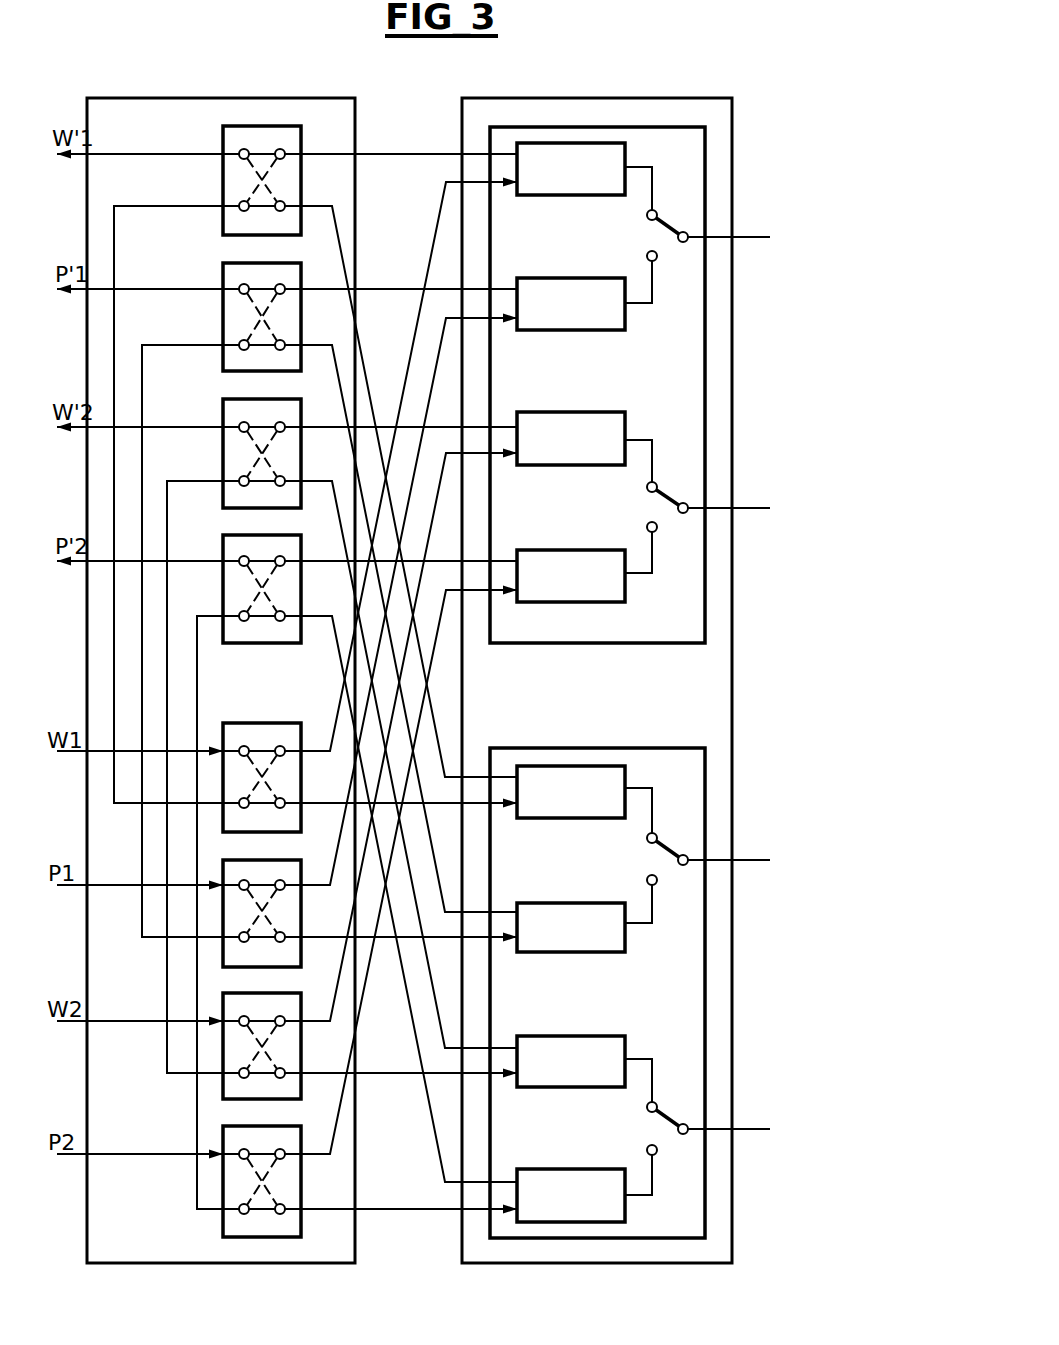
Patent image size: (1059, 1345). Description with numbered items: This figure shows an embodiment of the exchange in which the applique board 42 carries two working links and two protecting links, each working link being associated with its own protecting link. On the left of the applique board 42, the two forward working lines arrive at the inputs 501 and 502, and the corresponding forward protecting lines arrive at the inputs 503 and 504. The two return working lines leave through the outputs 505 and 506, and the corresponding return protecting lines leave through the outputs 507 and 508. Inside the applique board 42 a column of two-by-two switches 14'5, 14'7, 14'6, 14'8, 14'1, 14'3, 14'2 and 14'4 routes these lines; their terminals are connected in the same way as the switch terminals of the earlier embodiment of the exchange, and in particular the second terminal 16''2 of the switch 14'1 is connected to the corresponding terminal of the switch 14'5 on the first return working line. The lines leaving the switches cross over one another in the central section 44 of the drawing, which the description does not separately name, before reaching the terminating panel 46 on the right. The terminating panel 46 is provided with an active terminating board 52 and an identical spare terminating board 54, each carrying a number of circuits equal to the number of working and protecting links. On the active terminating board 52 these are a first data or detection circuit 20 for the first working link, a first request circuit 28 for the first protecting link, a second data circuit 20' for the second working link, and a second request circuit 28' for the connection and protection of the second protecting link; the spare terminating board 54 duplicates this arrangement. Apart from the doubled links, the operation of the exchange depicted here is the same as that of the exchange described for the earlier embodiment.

The applique board 42 is at (221, 698).
The crossbar interconnection 44 is at (409, 739).
The terminating panel 46 is at (597, 698).
The active terminating board 52 is at (635, 643).
The spare terminating board 54 is at (683, 748).
The output 505 is at (132, 153).
The output 507 is at (155, 289).
The output 506 is at (172, 427).
The output 508 is at (190, 561).
The input 501 is at (76, 751).
The input 503 is at (76, 885).
The input 502 is at (76, 1021).
The input 504 is at (76, 1154).
The 2x2 switch 14'5 is at (262, 129).
The 2x2 switch 14'7 is at (225, 317).
The 2x2 switch 14'6 is at (225, 453).
The 2x2 switch 14'8 is at (234, 589).
The 2x2 switch 14'1 is at (200, 775).
The 2x2 switch 14'3 is at (290, 913).
The 2x2 switch 14'2 is at (290, 1046).
The 2x2 switch 14'4 is at (214, 1190).
The second terminal 16''2 is at (174, 841).
The first data circuit 20 is at (571, 198).
The first request circuit 28 is at (571, 276).
The second data circuit 20' is at (571, 408).
The second request circuit 28' is at (571, 544).